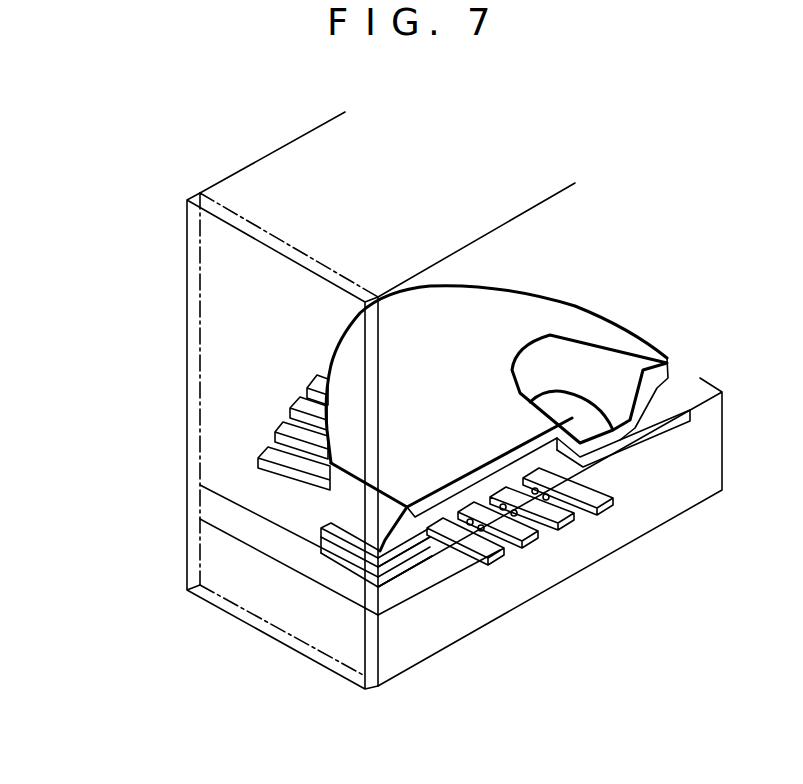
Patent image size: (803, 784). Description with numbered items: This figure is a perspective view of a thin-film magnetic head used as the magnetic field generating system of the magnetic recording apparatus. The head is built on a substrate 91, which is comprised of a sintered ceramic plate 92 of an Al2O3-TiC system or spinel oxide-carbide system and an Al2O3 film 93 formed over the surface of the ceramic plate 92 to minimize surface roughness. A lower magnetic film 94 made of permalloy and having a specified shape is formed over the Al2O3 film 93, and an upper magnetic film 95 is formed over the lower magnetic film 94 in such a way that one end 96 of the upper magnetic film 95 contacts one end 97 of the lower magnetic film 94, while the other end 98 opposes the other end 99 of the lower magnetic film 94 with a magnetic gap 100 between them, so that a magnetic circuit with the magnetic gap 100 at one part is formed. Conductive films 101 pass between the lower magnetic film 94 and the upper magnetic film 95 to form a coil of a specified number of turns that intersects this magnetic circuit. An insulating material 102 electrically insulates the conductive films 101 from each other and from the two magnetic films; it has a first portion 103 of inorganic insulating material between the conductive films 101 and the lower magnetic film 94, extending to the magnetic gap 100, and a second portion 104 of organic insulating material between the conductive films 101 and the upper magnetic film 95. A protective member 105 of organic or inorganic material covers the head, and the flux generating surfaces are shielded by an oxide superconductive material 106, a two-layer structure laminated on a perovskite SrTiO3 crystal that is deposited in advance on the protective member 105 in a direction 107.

The substrate 91 is at (255, 643).
The sintered ceramic plate 92 is at (213, 593).
The Al2O3 film 93 is at (247, 537).
The lower magnetic film 94 is at (393, 578).
The upper magnetic film 95 is at (578, 313).
The one end of the upper magnetic film 96 is at (615, 427).
The one end of the lower magnetic film 97 is at (627, 442).
The other end of the upper magnetic film 98 is at (321, 536).
The other end of the lower magnetic film 99 is at (355, 572).
The magnetic gap 100 is at (322, 550).
The conductive films 101 is at (488, 565).
The insulating material 102 is at (531, 636).
The first portion 103 is at (452, 540).
The second portion 104 is at (440, 543).
The protective member 105 is at (290, 147).
The oxide superconductive material 106 is at (188, 267).
The direction 107 is at (140, 480).